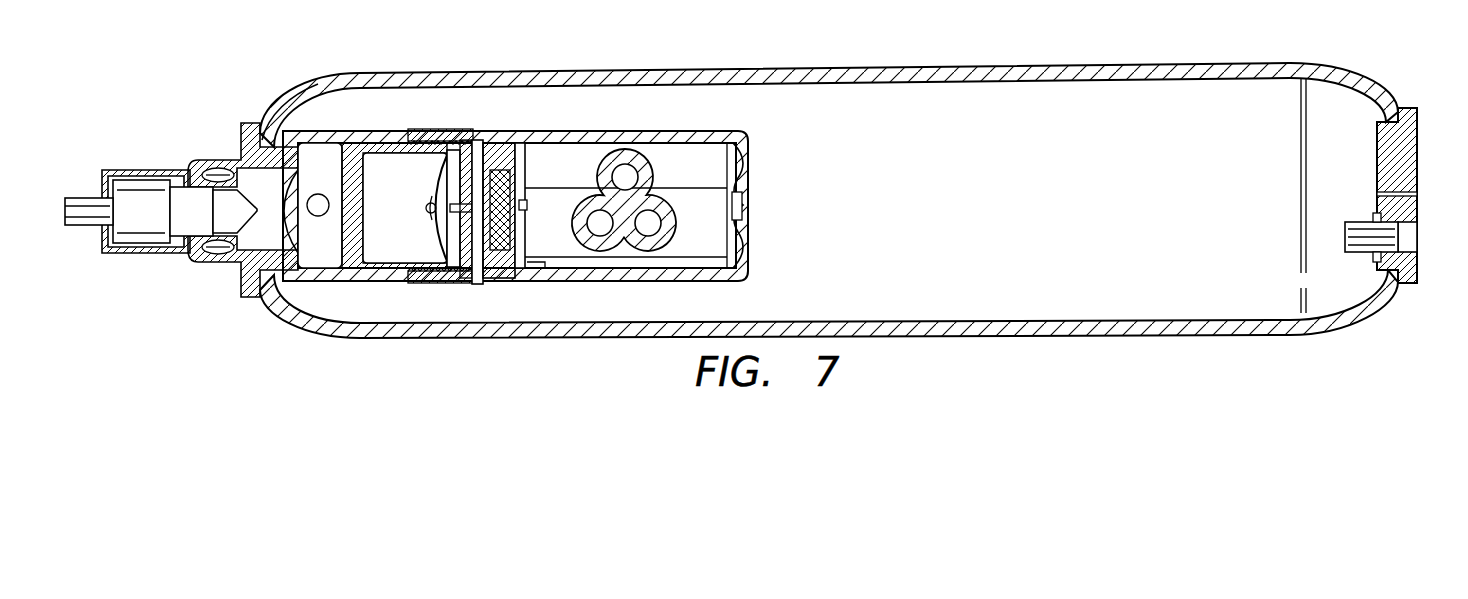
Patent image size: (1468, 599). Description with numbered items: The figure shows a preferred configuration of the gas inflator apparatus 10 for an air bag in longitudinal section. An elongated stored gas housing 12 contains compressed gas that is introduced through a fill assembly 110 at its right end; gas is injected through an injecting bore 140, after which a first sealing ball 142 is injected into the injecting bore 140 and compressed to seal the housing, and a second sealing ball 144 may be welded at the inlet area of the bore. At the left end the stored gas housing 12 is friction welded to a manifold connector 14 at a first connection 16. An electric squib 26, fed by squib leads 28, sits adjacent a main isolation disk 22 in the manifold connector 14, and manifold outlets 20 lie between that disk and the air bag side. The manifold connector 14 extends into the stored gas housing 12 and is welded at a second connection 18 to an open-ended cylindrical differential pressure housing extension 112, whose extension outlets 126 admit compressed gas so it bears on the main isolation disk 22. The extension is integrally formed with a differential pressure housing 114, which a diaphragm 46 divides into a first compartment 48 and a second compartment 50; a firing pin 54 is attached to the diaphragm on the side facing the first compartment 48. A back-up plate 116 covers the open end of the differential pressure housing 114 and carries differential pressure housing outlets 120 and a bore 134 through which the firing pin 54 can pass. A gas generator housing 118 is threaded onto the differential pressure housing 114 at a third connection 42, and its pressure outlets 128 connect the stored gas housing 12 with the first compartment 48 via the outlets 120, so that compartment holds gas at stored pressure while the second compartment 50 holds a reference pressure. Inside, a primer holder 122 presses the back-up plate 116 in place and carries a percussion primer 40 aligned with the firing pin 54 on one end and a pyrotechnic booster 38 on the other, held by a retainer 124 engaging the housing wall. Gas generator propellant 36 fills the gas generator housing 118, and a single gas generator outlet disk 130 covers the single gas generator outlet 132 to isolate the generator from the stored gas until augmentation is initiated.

The gas inflator apparatus 10 is at (175, 41).
The stored gas housing 12 is at (806, 70).
The manifold connector 14 is at (242, 292).
The first connection 16 is at (264, 298).
The second connection 18 is at (282, 110).
The manifold outlets 20 is at (208, 166).
The main isolation disk 22 is at (237, 220).
The electric squib 26 is at (145, 195).
The squib leads 28 is at (90, 197).
The gas generator propellant 36 is at (660, 176).
The pyrotechnic booster 38 is at (527, 180).
The percussion primer 40 is at (525, 228).
The third connection 42 is at (418, 132).
The diaphragm 46 is at (441, 133).
The first compartment 48 is at (428, 236).
The second compartment 50 is at (380, 221).
The firing pin 54 is at (431, 182).
The fill assembly 110 is at (1413, 108).
The differential pressure housing extension 112 is at (290, 283).
The differential pressure housing 114 is at (387, 281).
The back-up plate 116 is at (470, 283).
The gas generator housing 118 is at (636, 129).
The differential pressure housing outlets 120 is at (488, 133).
The primer holder 122 is at (523, 282).
The retainer 124 is at (533, 262).
The extension outlets 126 is at (314, 140).
The pressure outlets 128 is at (474, 136).
The gas generator outlet disk 130 is at (750, 227).
The gas generator outlet 132 is at (750, 197).
The bore 134 is at (522, 205).
The injecting bore 140 is at (1376, 191).
The first sealing ball 142 is at (1380, 205).
The second sealing ball 144 is at (1420, 196).